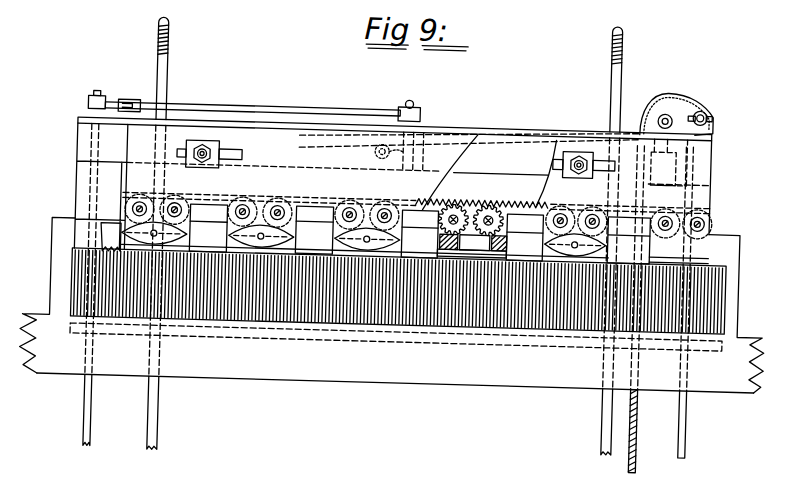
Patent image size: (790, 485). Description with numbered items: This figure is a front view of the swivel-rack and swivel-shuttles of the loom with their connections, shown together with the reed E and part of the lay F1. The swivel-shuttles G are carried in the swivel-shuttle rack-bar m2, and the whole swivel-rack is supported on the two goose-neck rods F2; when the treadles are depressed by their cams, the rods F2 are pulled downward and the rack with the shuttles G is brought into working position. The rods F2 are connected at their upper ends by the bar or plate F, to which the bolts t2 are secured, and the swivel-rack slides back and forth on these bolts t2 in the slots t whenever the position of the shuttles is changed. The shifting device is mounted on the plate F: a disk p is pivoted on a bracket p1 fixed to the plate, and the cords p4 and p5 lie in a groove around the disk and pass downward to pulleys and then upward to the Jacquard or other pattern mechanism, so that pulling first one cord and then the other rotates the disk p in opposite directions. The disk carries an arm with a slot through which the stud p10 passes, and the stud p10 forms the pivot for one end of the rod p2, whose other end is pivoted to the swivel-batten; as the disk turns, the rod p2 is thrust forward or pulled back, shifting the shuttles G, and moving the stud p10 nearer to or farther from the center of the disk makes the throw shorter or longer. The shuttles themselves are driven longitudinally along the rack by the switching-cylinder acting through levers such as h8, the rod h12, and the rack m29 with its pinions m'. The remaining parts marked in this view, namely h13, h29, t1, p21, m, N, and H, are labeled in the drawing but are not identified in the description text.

The plate F is at (78, 135).
The lay F1 is at (395, 350).
The goose-neck rods F2 is at (168, 50).
The lever h8 is at (103, 101).
The rod h12 is at (303, 101).
The pin block h13 is at (412, 94).
The pivot h29 is at (368, 147).
The slot t is at (243, 148).
The stop block t1 is at (197, 137).
The bolt t2 is at (214, 136).
The disk p is at (675, 81).
The bracket p1 is at (698, 140).
The rod p2 is at (504, 118).
The lever arm p21 is at (432, 118).
The stud p10 is at (713, 103).
The cord p4 is at (646, 419).
The cord p5 is at (695, 417).
The rollers m is at (434, 213).
The swivel-shuttle rack-bar m2 is at (703, 175).
The rack m29 is at (472, 217).
The pinions m' is at (482, 191).
The bearing blocks N is at (419, 233).
The swivel-shuttles G is at (406, 233).
The base frame H is at (742, 231).
The reed E is at (716, 285).